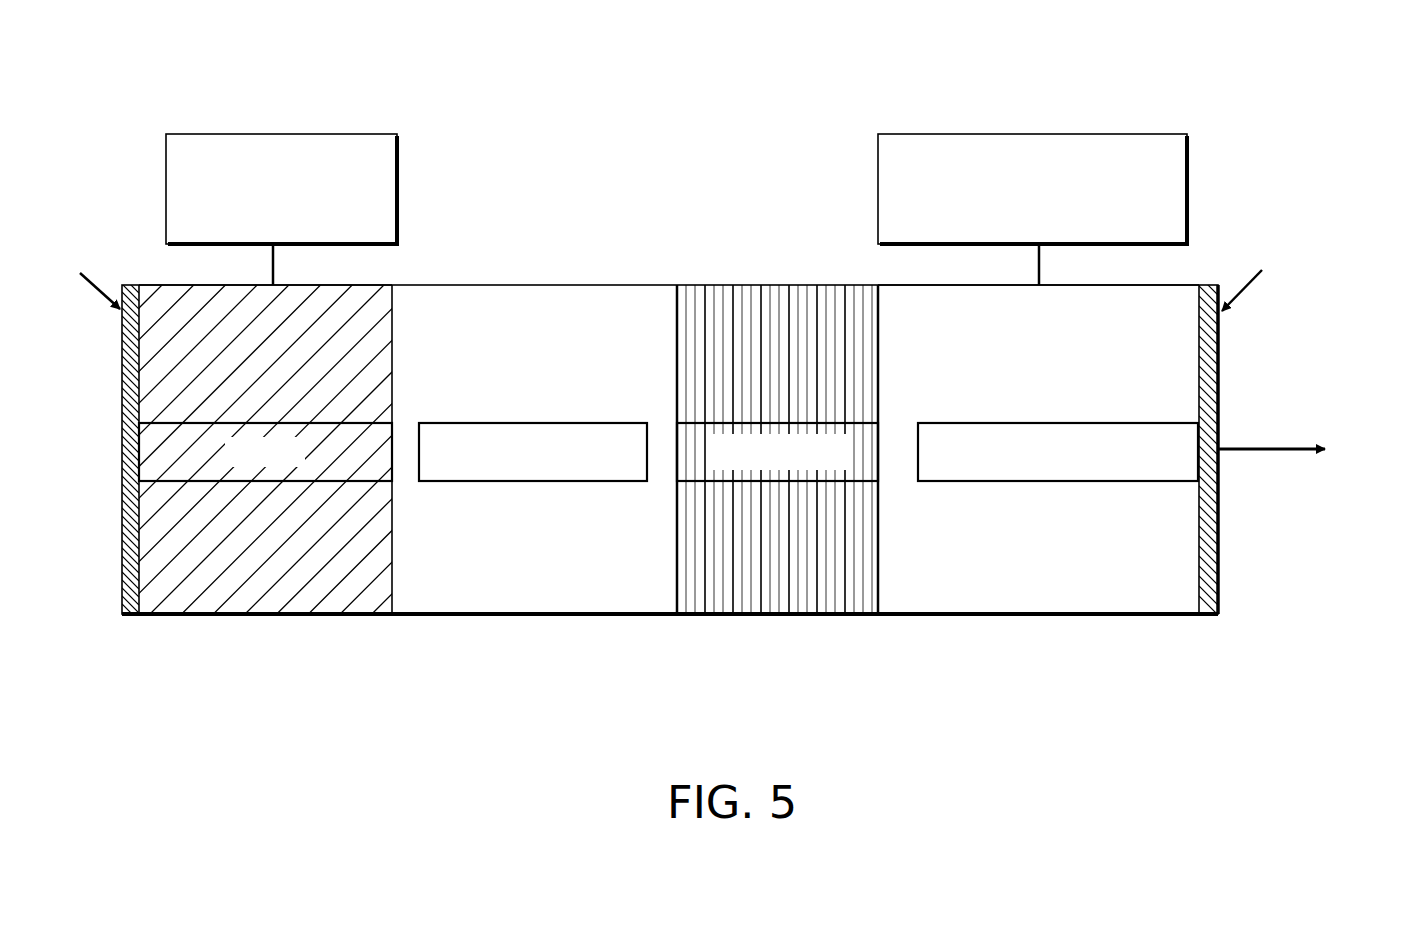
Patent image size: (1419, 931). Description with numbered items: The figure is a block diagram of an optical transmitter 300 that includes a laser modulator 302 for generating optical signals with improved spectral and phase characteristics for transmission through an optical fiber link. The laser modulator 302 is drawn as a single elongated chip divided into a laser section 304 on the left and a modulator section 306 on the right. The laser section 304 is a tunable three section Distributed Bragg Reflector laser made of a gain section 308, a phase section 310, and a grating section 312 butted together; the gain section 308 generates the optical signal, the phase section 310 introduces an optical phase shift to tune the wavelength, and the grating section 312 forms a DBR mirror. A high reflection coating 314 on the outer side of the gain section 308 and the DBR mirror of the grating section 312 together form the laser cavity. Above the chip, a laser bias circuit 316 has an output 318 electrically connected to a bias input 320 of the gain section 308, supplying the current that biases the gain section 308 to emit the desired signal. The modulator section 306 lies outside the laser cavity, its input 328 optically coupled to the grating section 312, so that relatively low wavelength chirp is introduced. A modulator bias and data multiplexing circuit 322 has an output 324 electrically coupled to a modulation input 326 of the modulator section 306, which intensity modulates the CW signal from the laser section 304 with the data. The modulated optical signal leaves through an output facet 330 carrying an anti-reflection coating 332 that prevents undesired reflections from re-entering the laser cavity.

The optical transmitter 300 is at (703, 393).
The laser modulator 302 is at (556, 250).
The laser section 304 is at (439, 495).
The modulator section 306 is at (1038, 496).
The gain section 308 is at (250, 617).
The phase section 310 is at (518, 617).
The grating section 312 is at (765, 617).
The high reflection coating 314 is at (121, 603).
The laser bias circuit 316 is at (281, 133).
The output 318 is at (276, 250).
The bias input 320 is at (268, 284).
The modulator bias and data multiplexing circuit 322 is at (1035, 133).
The output 324 is at (1042, 250).
The modulation input 326 is at (1033, 284).
The input 328 is at (880, 545).
The output facet 330 is at (1198, 545).
The anti-reflection coating 332 is at (1219, 603).